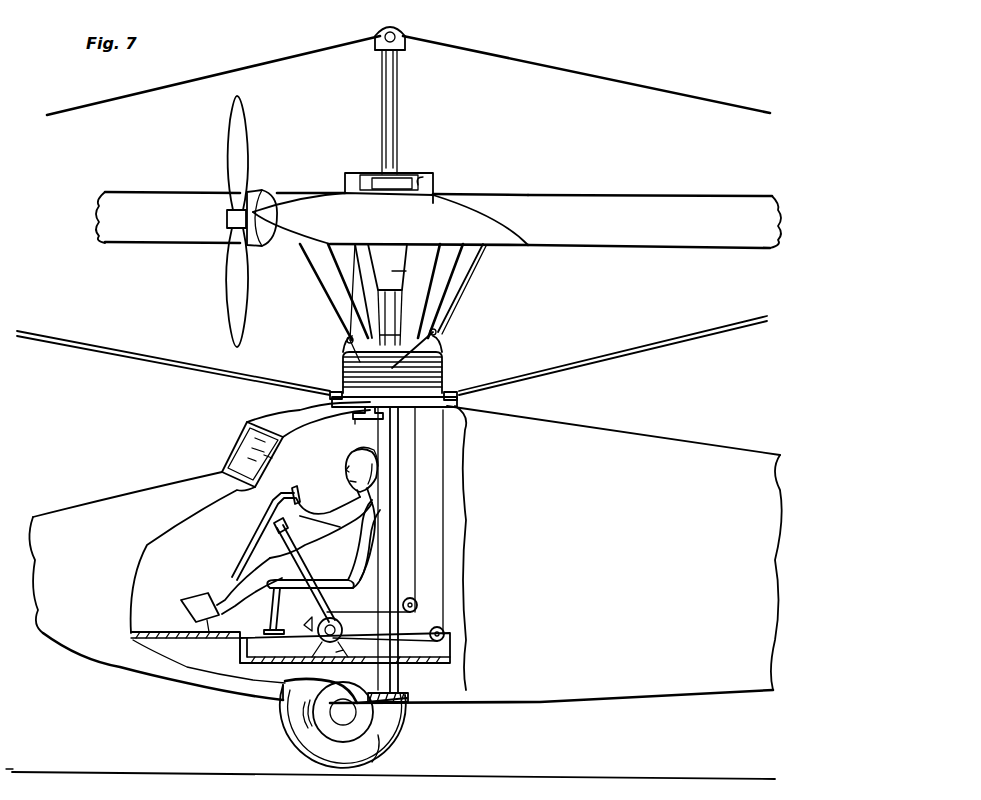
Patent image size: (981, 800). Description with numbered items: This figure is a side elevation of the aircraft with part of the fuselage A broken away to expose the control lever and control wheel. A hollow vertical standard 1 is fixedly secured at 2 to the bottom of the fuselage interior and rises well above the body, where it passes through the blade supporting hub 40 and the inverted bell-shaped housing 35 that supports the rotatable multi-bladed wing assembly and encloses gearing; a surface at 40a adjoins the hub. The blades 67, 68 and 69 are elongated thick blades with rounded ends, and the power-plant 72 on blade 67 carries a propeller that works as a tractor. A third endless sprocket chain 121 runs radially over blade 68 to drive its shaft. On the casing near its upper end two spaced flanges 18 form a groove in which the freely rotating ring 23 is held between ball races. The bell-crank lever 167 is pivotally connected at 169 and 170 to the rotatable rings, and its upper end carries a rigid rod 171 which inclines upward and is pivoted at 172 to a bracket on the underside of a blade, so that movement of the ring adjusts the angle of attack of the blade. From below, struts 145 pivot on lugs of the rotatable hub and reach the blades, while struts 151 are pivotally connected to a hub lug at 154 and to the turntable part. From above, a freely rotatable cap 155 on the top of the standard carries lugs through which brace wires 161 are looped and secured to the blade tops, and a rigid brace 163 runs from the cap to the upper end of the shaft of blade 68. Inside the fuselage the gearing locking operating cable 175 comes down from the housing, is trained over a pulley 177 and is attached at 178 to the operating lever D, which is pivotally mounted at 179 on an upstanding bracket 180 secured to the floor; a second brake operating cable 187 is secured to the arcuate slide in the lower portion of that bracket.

The vertical standard 1 is at (392, 146).
The securing point of standard 2 is at (370, 688).
The circumferential flanges 18 is at (434, 367).
The ring 23 is at (340, 357).
The inverted bell-shaped housing 35 is at (383, 262).
The blade supporting hub 40 is at (352, 173).
The bracket extension 40a is at (418, 185).
The blade 67 is at (192, 230).
The blade 68 is at (462, 221).
The blade 69 is at (644, 202).
The power-plant 72 is at (260, 197).
The third endless sprocket chain 121 is at (416, 168).
The struts 145 is at (142, 358).
The struts 151 is at (400, 303).
The pivotal connection of struts 154 is at (405, 418).
The freely rotatable cap 155 is at (397, 37).
The brace wires 161 is at (287, 53).
The rigid brace 163 is at (386, 89).
The bell-crank lever 167 is at (436, 336).
The pivotal connection 169 is at (437, 380).
The pivotal connection 170 is at (460, 397).
The rigid rods 171 is at (463, 290).
The pivotal connection of rods 172 is at (483, 247).
The gearing braking or locking operating cable 175 is at (417, 523).
The pulley 177 is at (414, 600).
The cable attachment 178 is at (328, 610).
The pivot of operating lever 179 is at (316, 622).
The upstanding bracket 180 is at (306, 650).
The second brake operating cable 187 is at (445, 602).
The fuselage A is at (622, 443).
The operating lever D is at (292, 559).